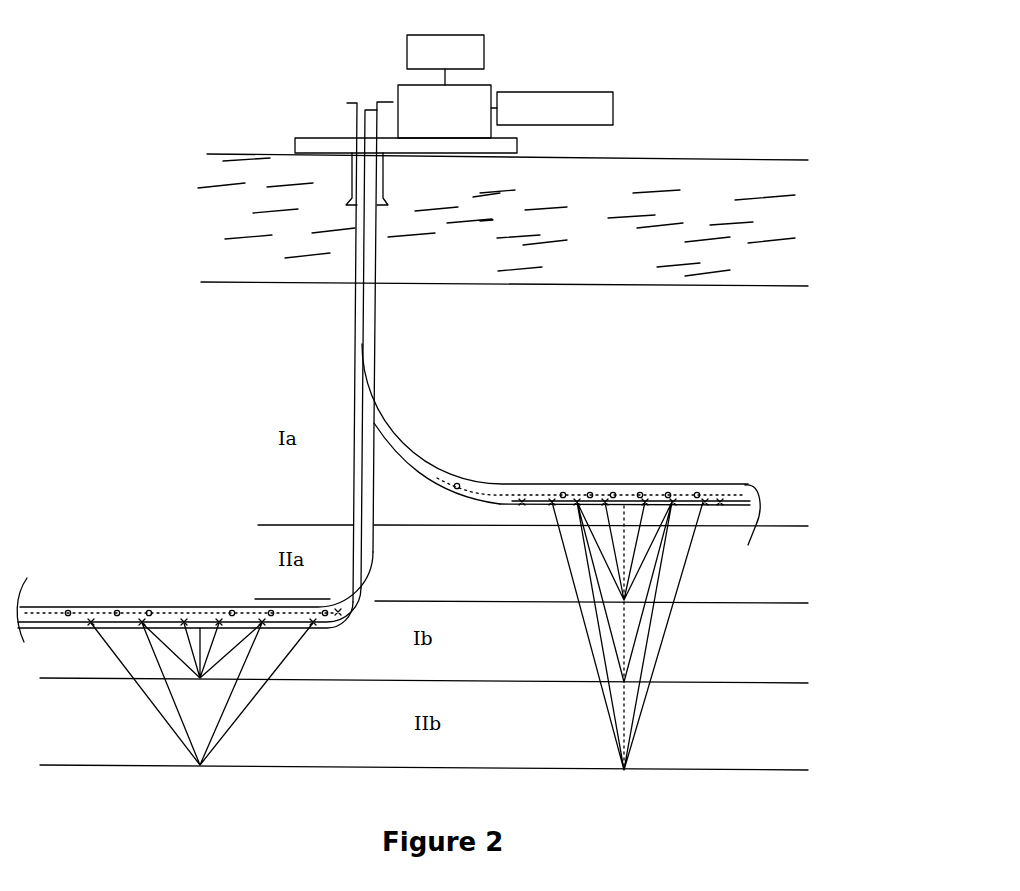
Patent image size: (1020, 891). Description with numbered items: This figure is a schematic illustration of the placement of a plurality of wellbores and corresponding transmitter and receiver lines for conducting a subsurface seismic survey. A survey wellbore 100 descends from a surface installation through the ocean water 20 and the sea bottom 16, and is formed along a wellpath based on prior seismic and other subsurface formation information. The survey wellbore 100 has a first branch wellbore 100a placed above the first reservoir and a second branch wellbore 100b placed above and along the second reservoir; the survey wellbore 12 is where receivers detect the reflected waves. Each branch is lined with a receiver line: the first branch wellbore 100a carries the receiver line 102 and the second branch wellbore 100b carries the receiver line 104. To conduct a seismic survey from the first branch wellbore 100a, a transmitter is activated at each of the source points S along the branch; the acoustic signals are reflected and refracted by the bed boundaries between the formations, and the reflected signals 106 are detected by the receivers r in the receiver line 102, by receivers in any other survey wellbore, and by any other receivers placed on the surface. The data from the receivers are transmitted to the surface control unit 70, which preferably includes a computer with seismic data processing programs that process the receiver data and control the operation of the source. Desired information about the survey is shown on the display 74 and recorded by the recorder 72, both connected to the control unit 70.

The display 74 is at (466, 34).
The surface control unit 70 is at (403, 84).
The recorder 72 is at (590, 92).
The ocean water 20 is at (612, 247).
The sea bottom 16 is at (240, 281).
The survey wellbore 100 is at (355, 328).
The survey wellbore 12 is at (437, 488).
The first branch wellbore 100a is at (548, 483).
The second branch wellbore 100b is at (199, 606).
The source points S is at (463, 483).
The receivers r is at (522, 504).
The receiver line 102 is at (680, 502).
The receiver line 104 is at (78, 623).
The reflected signals 106 is at (670, 623).